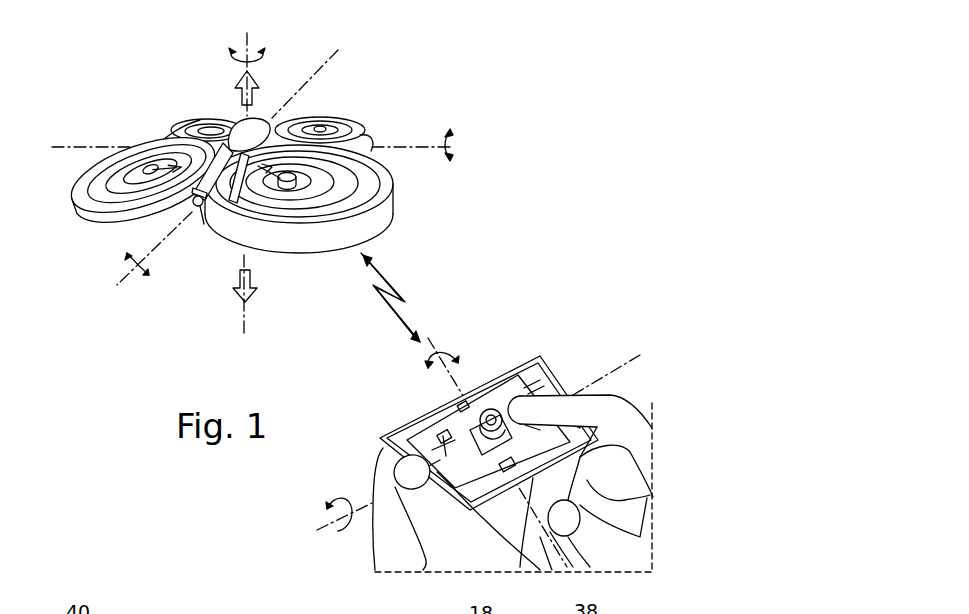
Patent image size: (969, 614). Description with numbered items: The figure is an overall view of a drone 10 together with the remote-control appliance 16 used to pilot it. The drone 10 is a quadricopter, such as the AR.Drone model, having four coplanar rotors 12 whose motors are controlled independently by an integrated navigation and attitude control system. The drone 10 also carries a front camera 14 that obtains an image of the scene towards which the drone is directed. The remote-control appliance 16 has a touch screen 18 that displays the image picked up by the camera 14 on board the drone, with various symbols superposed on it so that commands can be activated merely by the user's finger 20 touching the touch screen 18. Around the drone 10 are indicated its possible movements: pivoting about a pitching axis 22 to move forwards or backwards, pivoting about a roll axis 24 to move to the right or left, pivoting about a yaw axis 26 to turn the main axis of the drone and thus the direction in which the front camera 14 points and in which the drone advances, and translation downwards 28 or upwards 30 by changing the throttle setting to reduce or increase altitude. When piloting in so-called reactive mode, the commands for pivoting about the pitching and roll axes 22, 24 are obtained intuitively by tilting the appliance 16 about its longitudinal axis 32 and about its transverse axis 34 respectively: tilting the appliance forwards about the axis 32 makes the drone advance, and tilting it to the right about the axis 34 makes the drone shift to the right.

The drone 10 is at (418, 82).
The rotors 12 is at (192, 130).
The front camera 14 is at (200, 209).
The remote-control appliance 16 is at (546, 344).
The touch screen 18 is at (488, 412).
The user's finger 20 is at (582, 398).
The pitching axis 22 is at (455, 148).
The roll axis 24 is at (130, 268).
The yaw axis 26 is at (243, 46).
The translation downwards 28 is at (256, 286).
The translation upwards 30 is at (256, 97).
The longitudinal axis 32 is at (328, 511).
The transverse axis 34 is at (437, 345).